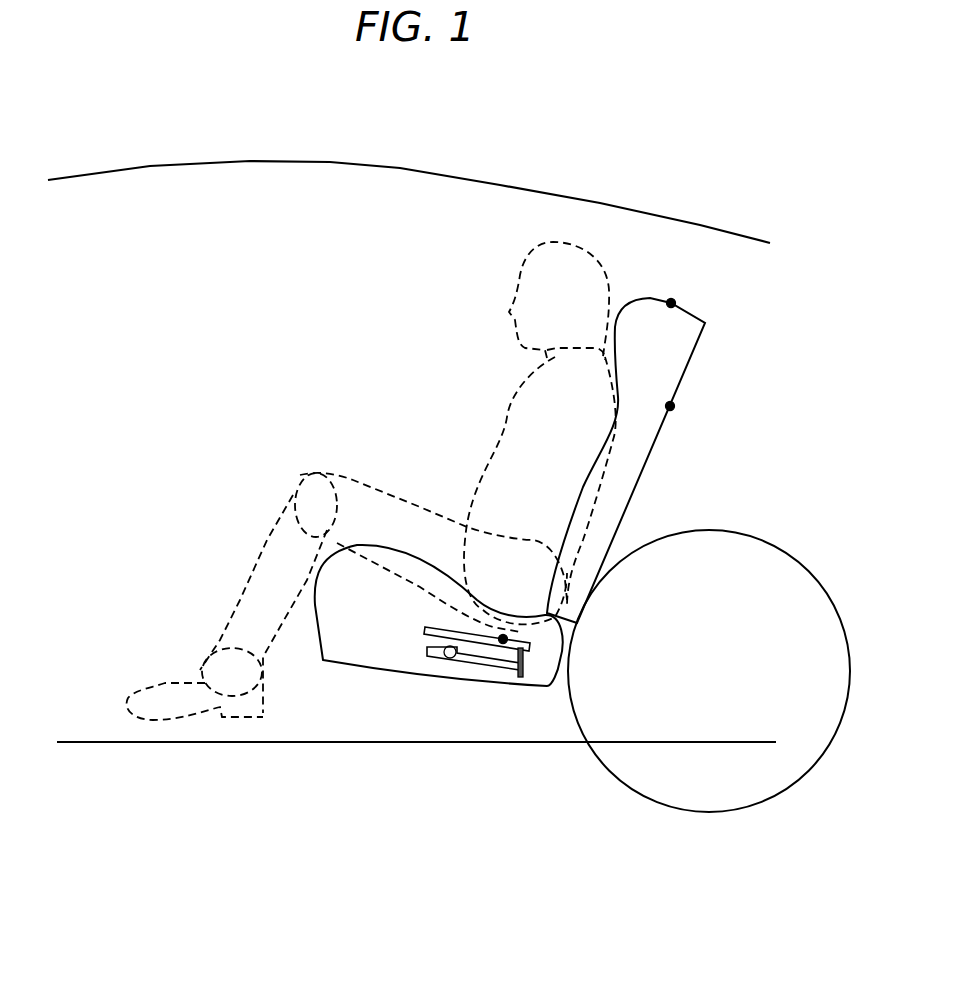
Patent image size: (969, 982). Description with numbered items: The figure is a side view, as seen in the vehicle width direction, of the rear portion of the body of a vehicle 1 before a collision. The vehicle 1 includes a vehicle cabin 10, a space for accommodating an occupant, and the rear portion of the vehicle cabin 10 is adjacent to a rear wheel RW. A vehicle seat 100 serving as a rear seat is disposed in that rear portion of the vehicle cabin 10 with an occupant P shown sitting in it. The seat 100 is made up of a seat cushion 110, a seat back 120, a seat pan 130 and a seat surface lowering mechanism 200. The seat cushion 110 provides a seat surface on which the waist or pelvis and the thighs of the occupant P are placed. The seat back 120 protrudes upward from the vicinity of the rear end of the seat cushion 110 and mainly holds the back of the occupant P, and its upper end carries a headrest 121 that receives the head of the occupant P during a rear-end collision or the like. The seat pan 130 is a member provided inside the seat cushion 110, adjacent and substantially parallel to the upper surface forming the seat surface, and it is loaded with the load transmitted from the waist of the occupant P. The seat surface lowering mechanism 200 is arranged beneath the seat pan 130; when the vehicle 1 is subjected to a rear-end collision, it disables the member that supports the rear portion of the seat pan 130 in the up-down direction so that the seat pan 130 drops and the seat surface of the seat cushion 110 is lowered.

The vehicle 1 is at (103, 158).
The vehicle cabin 10 is at (275, 313).
The occupant P is at (543, 227).
The vehicle seat 100 is at (660, 275).
The headrest 121 is at (671, 303).
The seat back 120 is at (670, 406).
The seat pan 130 is at (503, 639).
The seat cushion 110 is at (368, 664).
The seat surface lowering mechanism 200 is at (620, 684).
The rear wheel RW is at (738, 808).